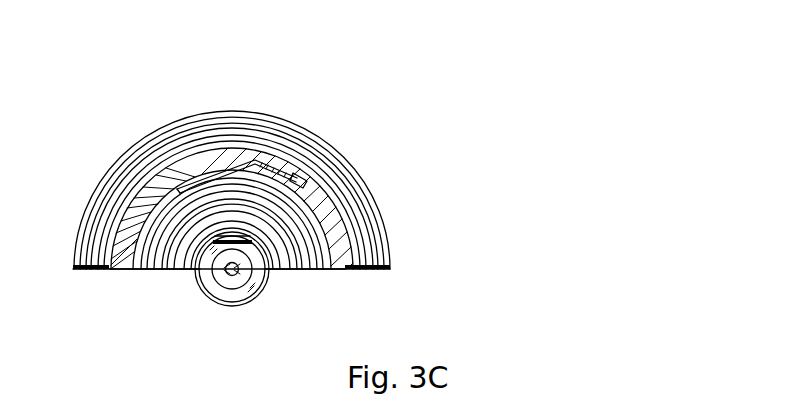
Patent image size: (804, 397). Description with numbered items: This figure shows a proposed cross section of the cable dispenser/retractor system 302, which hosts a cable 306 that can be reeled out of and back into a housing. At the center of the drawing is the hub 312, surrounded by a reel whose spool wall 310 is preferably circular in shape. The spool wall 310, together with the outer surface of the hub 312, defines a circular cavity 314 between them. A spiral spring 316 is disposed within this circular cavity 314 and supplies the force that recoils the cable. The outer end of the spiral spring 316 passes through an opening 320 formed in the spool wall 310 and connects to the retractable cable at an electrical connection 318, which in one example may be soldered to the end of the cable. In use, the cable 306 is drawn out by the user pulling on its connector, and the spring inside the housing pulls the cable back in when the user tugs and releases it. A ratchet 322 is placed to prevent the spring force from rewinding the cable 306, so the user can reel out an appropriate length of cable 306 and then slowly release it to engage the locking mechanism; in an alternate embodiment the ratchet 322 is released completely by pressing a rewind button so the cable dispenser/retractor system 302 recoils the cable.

The cable dispenser/retractor system 302 is at (408, 70).
The cable 306 is at (95, 202).
The spool wall 310 is at (317, 193).
The hub 312 is at (252, 250).
The circular cavity 314 is at (300, 207).
The spiral spring 316 is at (318, 232).
The electrical connection 318 is at (295, 167).
The opening 320 is at (240, 174).
The ratchet 322 is at (176, 268).